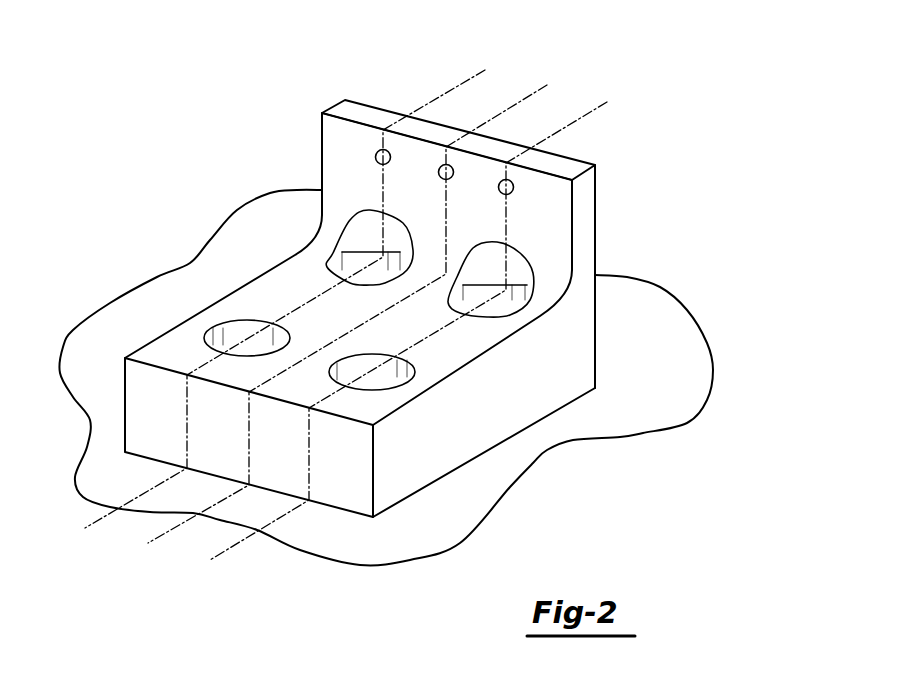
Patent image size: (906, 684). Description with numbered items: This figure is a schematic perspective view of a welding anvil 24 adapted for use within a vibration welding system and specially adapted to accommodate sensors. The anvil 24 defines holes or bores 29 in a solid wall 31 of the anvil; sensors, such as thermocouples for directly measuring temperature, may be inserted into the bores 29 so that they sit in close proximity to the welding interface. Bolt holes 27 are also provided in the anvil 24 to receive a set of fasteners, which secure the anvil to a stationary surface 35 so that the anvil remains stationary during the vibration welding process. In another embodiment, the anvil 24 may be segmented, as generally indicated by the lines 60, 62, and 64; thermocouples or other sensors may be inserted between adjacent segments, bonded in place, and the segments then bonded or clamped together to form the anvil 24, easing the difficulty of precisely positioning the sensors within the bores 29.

The anvil 24 is at (663, 73).
The bolt holes 27 is at (350, 277).
The bores 29 is at (443, 172).
The solid wall 31 is at (488, 229).
The stationary surface 35 is at (608, 422).
The line 60 is at (468, 77).
The line 62 is at (532, 94).
The line 64 is at (591, 112).